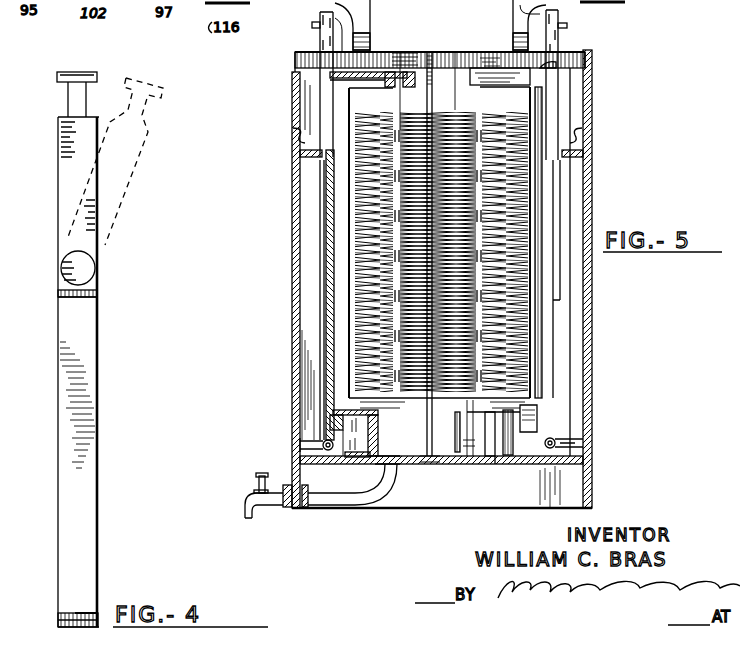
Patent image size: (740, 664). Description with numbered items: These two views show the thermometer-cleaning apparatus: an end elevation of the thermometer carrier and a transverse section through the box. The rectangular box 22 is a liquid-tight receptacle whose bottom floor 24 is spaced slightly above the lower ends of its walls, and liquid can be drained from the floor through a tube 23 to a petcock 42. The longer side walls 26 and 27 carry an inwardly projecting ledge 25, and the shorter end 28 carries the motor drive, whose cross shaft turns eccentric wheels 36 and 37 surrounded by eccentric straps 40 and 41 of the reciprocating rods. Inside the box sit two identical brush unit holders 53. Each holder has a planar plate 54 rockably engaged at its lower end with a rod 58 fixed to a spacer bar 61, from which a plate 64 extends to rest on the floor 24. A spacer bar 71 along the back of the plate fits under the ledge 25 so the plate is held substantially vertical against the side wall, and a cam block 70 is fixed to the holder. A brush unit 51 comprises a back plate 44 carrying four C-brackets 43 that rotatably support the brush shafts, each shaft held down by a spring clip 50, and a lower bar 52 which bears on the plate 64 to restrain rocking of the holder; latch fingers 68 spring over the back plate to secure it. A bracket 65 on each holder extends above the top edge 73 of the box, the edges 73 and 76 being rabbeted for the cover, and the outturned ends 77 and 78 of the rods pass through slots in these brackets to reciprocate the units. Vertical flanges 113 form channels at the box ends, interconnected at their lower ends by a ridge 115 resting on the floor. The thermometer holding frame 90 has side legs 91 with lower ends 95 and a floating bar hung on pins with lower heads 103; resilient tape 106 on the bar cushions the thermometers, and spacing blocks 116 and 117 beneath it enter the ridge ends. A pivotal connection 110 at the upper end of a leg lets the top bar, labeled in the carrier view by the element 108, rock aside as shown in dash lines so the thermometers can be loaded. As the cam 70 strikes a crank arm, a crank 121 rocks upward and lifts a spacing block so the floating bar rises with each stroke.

In FIG. 5, the rectangular box 22 is at (592, 323).
In FIG. 5, the tube 23 is at (345, 502).
In FIG. 5, the bottom floor 24 is at (492, 463).
In FIG. 5, the ledge 25 is at (293, 132).
In FIG. 5, the side wall 26 is at (588, 205).
In FIG. 5, the side wall 27 is at (293, 242).
In FIG. 5, the end wall 28 is at (417, 50).
In FIG. 5, the eccentric wheel 36 is at (512, 12).
In FIG. 5, the eccentric wheel 37 is at (371, 12).
In FIG. 5, the eccentric strap 40 is at (520, 32).
In FIG. 5, the eccentric strap 41 is at (360, 43).
In FIG. 5, the petcock 42 is at (248, 500).
In FIG. 5, the C-bracket 43 is at (343, 282).
In FIG. 5, the back plate 44 is at (323, 173).
In FIG. 5, the clip 50 is at (380, 53).
In FIG. 5, the brush unit 51 is at (374, 115).
In FIG. 5, the lower bar 52 is at (372, 465).
In FIG. 5, the brush unit holder 53 is at (547, 286).
In FIG. 5, the planar plate 54 is at (325, 212).
In FIG. 5, the rod 58 is at (298, 455).
In FIG. 5, the spacer bar 61 is at (300, 445).
In FIG. 5, the plate 64 is at (340, 462).
In FIG. 5, the bracket 65 is at (322, 37).
In FIG. 5, the latch finger 68 is at (553, 68).
In FIG. 5, the cam block 70 is at (337, 418).
In FIG. 5, the spacer bar 71 is at (307, 155).
In FIG. 5, the top edge 73 is at (295, 63).
In FIG. 5, the top edge 76 is at (588, 57).
In FIG. 5, the outturned end 77 is at (316, 23).
In FIG. 5, the outturned end 78 is at (564, 28).
In FIG. 4, the thermometer holding frame 90 is at (98, 430).
In FIG. 4, the side leg 91 is at (83, 343).
In FIG. 4, the lower end 95 is at (83, 612).
In FIG. 5, the lower head 103 is at (700, 12).
In FIG. 5, the resilient tape 106 is at (435, 2).
In FIG. 4, the plunger 108 is at (79, 78).
In FIG. 4, the pivot connection 110 is at (72, 165).
In FIG. 5, the vertical flange 113 is at (432, 38).
In FIG. 5, the ridge 115 is at (457, 432).
In FIG. 4, the spacing block 116 is at (62, 620).
In FIG. 5, the spacing block 117 is at (638, 3).
In FIG. 5, the crank 121 is at (438, 463).